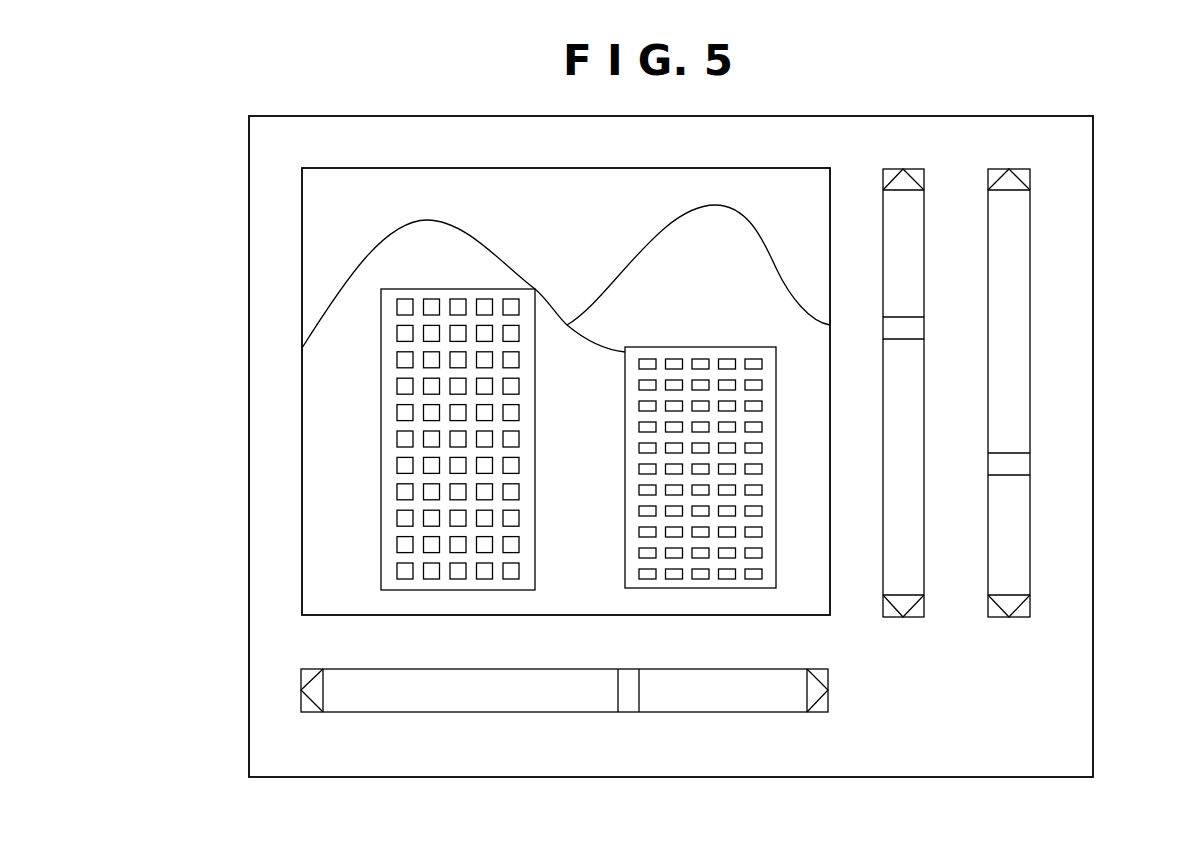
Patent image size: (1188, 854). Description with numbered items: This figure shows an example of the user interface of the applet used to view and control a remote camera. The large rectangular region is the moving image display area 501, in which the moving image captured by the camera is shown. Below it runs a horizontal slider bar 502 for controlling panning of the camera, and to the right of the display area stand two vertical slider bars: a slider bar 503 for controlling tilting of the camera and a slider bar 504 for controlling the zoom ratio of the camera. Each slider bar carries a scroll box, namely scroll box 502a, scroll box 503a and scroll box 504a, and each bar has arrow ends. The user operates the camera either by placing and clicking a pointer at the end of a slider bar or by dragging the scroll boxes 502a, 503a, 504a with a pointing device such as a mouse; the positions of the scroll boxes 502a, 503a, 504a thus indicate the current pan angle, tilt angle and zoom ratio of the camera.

The moving image display area 501 is at (408, 168).
The slider bar for controlling panning 502 is at (301, 690).
The scroll box 502a is at (629, 702).
The slider bar for controlling tilting 503 is at (903, 169).
The scroll box 503a is at (921, 327).
The slider bar for controlling the zoom ratio 504 is at (1009, 169).
The scroll box 504a is at (1025, 464).